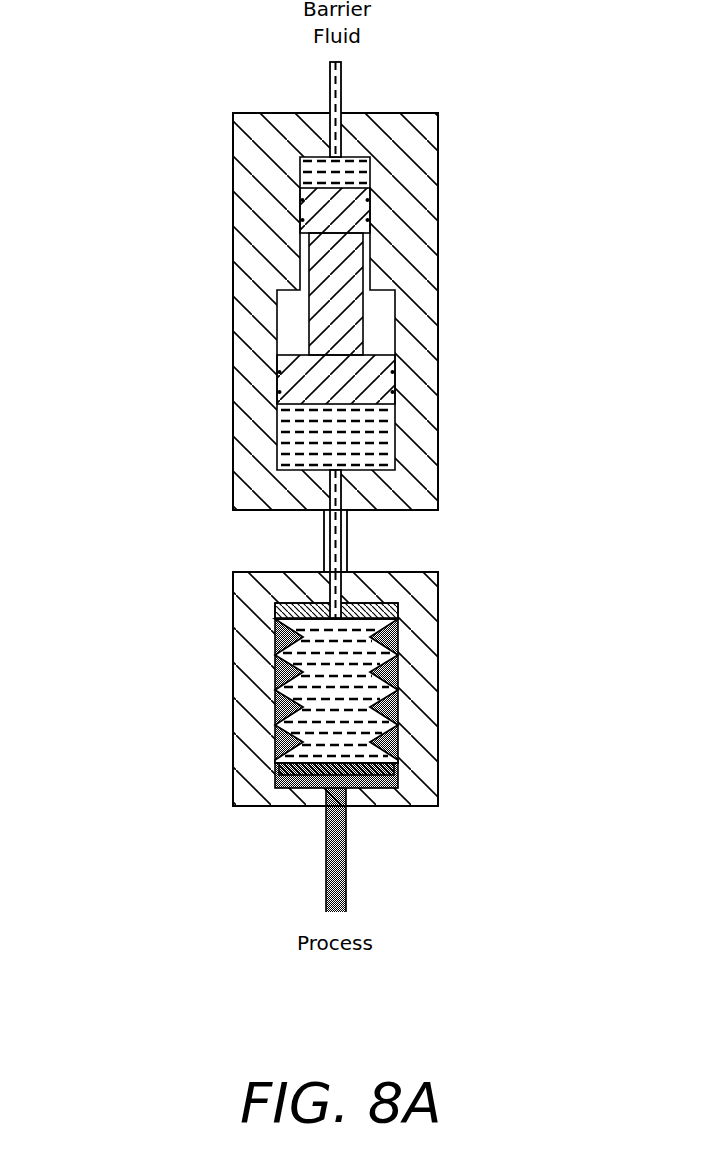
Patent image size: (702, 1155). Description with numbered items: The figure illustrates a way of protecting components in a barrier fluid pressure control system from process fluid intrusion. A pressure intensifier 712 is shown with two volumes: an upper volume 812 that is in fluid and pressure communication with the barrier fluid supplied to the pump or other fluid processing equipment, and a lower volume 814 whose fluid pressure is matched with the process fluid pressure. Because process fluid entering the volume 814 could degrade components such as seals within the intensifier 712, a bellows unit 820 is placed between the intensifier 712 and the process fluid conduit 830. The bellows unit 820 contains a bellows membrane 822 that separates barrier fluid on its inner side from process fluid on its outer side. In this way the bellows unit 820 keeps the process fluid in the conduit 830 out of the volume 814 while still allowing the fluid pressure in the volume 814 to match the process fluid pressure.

The pressure intensifier 712 is at (174, 374).
The volume 812 is at (362, 170).
The volume 814 is at (388, 436).
The bellows unit 820 is at (180, 697).
The bellows membrane 822 is at (386, 676).
The conduit 830 is at (341, 838).